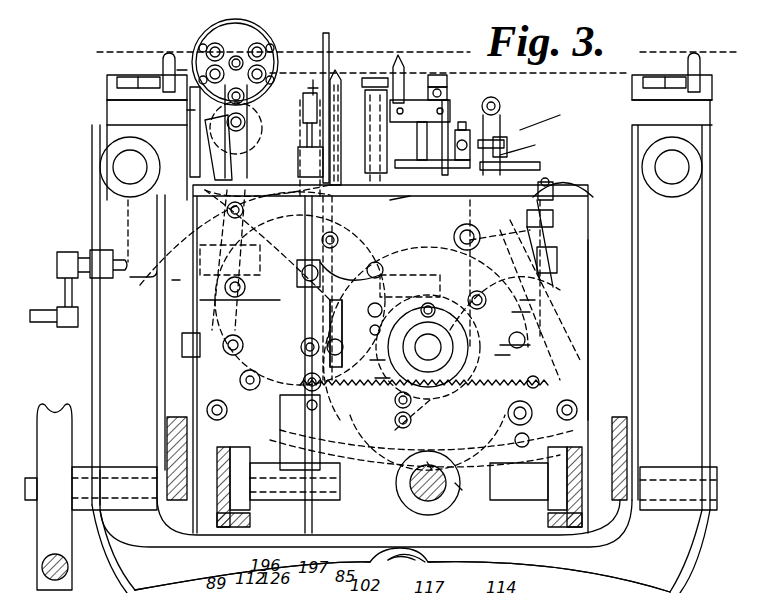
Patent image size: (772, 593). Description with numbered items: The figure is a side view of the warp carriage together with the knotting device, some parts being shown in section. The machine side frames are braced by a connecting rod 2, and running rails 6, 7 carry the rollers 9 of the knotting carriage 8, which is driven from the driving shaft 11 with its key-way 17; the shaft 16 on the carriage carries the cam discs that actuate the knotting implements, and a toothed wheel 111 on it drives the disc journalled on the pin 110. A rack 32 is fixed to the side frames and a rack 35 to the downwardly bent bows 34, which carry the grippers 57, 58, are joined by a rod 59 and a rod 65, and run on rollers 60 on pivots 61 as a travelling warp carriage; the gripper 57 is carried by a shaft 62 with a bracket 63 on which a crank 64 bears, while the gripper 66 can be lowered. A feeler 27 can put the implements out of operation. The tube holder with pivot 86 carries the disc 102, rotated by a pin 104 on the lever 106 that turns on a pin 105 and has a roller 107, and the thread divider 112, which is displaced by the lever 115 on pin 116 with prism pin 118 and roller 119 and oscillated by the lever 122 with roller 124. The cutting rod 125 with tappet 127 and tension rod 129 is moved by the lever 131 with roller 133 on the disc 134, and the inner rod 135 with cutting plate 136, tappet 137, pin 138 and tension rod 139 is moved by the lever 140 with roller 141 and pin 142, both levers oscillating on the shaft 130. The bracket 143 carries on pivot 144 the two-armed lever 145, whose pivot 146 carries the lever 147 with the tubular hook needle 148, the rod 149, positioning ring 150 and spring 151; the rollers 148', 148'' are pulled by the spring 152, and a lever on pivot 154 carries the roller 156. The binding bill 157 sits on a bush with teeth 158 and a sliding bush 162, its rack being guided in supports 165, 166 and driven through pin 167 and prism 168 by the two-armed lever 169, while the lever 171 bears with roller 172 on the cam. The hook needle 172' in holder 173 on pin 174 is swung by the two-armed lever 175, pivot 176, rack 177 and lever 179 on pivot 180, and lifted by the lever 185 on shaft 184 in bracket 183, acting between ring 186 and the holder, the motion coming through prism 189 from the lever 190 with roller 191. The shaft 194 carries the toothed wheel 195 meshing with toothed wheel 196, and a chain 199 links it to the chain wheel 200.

The connecting rod 2 is at (68, 572).
The running rail 6 is at (217, 517).
The running rail 7 is at (580, 512).
The knotting carriage 8 is at (586, 304).
The roller 9 is at (245, 456).
The driving shaft 11 is at (420, 485).
The shaft 16 is at (428, 350).
The groove or key-way 17 is at (428, 464).
The feeler 27 is at (402, 577).
The rack 32 is at (180, 415).
The downwardly bent bow 34 is at (92, 343).
The rack 35 is at (625, 428).
The gripper 57 is at (107, 85).
The gripper 58 is at (632, 85).
The rod 59 is at (415, 560).
The roller 60 is at (80, 402).
The pivot 61 is at (50, 478).
The shaft 62 is at (127, 167).
The bracket 63 is at (120, 118).
The crank 64 is at (68, 252).
The rod 65 is at (672, 167).
The gripper 66 is at (202, 72).
The pivot 86 is at (202, 172).
The disc 102 is at (265, 30).
The pin 104 is at (250, 92).
The pin 105 is at (278, 256).
The lever 106 is at (304, 167).
The roller 107 is at (305, 338).
The pin 110 is at (310, 335).
The toothed wheel 111 is at (392, 378).
The thread divider 112 is at (268, 56).
The lever 115 is at (190, 335).
The pin 116 is at (172, 285).
The pin 118 is at (185, 118).
The roller 119 is at (240, 380).
The lever 122 is at (228, 300).
The roller 124 is at (245, 402).
The rod 125 is at (308, 116).
The tappet 127 is at (310, 275).
The tension rod 129 is at (302, 300).
The shaft 130 is at (533, 403).
The lever 131 is at (312, 373).
The roller 133 is at (395, 420).
The disc 134 is at (457, 483).
The rod 135 is at (312, 85).
The cutting plate 136 is at (318, 89).
The tappet 137 is at (285, 346).
The pin 138 is at (300, 358).
The tension rod 139 is at (312, 395).
The lever 140 is at (333, 438).
The roller 141 is at (397, 430).
The pin 142 is at (310, 440).
The bracket 143 is at (540, 238).
The pivot 144 is at (525, 266).
The two-armed lever 145 is at (535, 313).
The pivot 146 is at (325, 235).
The lever 147 is at (422, 303).
The hook needle 148 is at (355, 121).
The roller 148' is at (366, 356).
The roller 148'' is at (539, 356).
The rod 149 is at (357, 88).
The positioning ring 150 is at (385, 325).
The spring 151 is at (385, 340).
The spring 152 is at (516, 424).
The pivot 154 is at (412, 300).
The roller 156 is at (522, 334).
The binding bill 157 is at (372, 88).
The teeth 158 is at (396, 201).
The bush 162 is at (455, 240).
The support 165 is at (350, 185).
The support 166 is at (510, 168).
The pin 167 is at (550, 222).
The prism 168 is at (550, 190).
The two-armed lever 169 is at (540, 256).
The lever 171 is at (470, 296).
The roller 172 is at (352, 264).
The hook needle 172' is at (424, 79).
The holder 173 is at (448, 100).
The pin 174 is at (440, 133).
The two-armed lever 175 is at (482, 138).
The pivot 176 is at (462, 130).
The rack 177 is at (490, 160).
The lever 179 is at (532, 342).
The pivot 180 is at (536, 283).
The bracket 183 is at (505, 162).
The shaft 184 is at (500, 106).
The lever 185 is at (486, 99).
The ring 186 is at (447, 84).
The prism 189 is at (502, 148).
The lever 190 is at (545, 185).
The roller 191 is at (530, 302).
The shaft 194 is at (205, 150).
The toothed wheel 195 is at (205, 147).
The toothed wheel 196 is at (213, 27).
The chain 199 is at (205, 187).
The chain wheel 200 is at (530, 376).